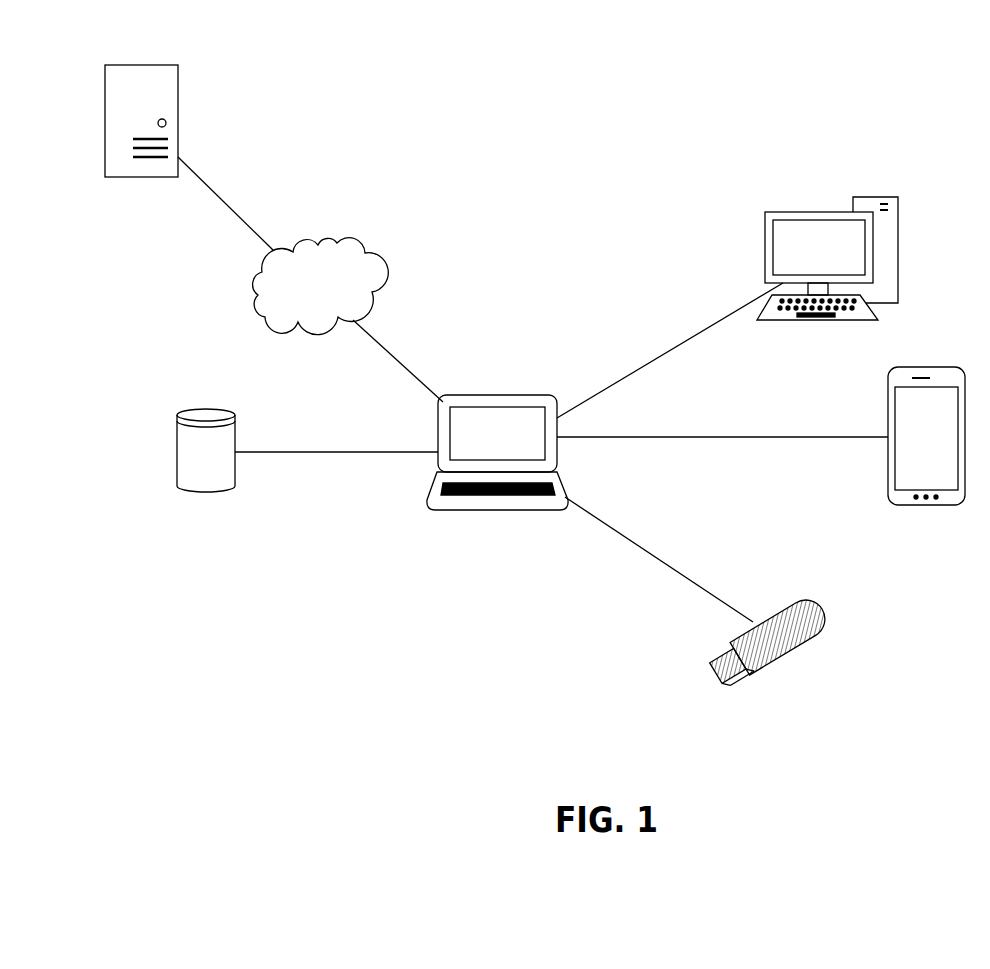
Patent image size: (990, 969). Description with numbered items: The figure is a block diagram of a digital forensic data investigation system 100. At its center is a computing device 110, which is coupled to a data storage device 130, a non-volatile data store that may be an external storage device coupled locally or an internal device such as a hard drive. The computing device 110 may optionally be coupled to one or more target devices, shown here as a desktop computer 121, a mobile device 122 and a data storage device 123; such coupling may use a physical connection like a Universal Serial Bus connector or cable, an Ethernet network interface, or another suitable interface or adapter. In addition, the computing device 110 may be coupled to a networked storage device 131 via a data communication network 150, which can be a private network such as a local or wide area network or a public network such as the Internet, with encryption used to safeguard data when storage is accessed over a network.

The data investigation system 100 is at (592, 135).
The computing device 110 is at (510, 510).
The desktop computer 121 is at (820, 320).
The mobile device 122 is at (925, 507).
The data storage device 123 is at (788, 657).
The data storage device 130 is at (202, 493).
The networked storage device 131 is at (132, 177).
The data communication network 150 is at (312, 333).